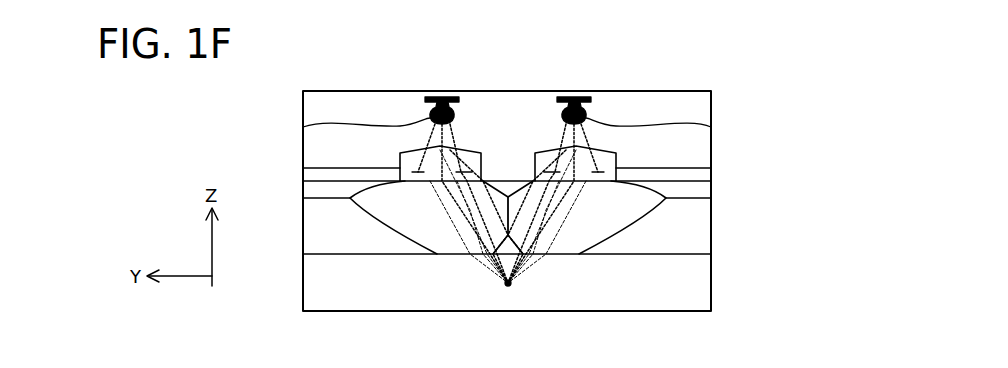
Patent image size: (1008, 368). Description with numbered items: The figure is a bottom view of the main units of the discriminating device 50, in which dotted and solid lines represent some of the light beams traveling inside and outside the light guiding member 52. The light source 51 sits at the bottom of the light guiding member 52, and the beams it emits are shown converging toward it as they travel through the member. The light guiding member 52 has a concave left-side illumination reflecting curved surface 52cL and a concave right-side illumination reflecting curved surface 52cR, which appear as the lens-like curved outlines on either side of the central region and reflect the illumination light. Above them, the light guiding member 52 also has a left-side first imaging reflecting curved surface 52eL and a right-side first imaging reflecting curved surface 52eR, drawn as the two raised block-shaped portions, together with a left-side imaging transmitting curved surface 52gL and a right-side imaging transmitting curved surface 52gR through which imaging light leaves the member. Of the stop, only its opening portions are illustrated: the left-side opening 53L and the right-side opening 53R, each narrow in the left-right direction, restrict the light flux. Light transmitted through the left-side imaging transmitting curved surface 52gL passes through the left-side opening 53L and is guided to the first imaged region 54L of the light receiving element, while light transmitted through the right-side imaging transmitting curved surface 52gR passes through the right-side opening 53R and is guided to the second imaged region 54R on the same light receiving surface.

The discriminating device 50 is at (301, 87).
The light source 51 is at (508, 283).
The light guiding member 52 is at (312, 286).
The right-side imaging transmitting curved surface 52gR is at (303, 127).
The left-side imaging transmitting curved surface 52gL is at (711, 127).
The right-side first imaging reflecting curved surface 52eR is at (407, 160).
The left-side first imaging reflecting curved surface 52eL is at (609, 160).
The right-side illumination reflecting curved surface 52cR is at (383, 208).
The left-side illumination reflecting curved surface 52cL is at (633, 208).
The right-side opening 53R is at (460, 106).
The left-side opening 53L is at (593, 106).
The second imaged region 54R is at (435, 96).
The first imaged region 54L is at (570, 96).